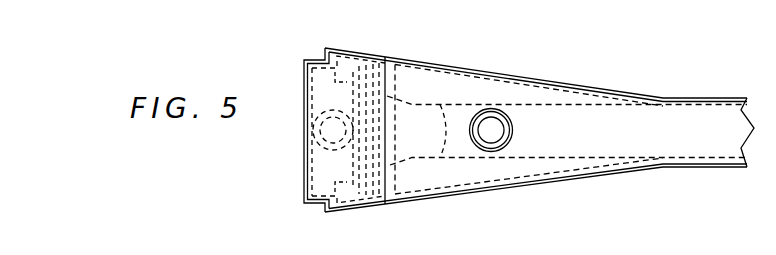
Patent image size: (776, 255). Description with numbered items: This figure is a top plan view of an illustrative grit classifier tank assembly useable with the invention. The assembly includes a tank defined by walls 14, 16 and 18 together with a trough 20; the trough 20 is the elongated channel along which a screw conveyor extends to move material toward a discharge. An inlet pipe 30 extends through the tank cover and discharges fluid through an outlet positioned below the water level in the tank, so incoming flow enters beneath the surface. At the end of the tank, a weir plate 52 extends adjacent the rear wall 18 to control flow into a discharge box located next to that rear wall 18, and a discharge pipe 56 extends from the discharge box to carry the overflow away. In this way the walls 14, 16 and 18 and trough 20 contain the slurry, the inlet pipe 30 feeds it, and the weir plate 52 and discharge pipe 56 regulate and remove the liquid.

The wall 14 is at (555, 181).
The wall 16 is at (583, 84).
The rear wall 18 is at (388, 97).
The trough 20 is at (645, 118).
The inlet pipe 30 is at (492, 128).
The weir plate 52 is at (362, 90).
The discharge pipe 56 is at (333, 131).